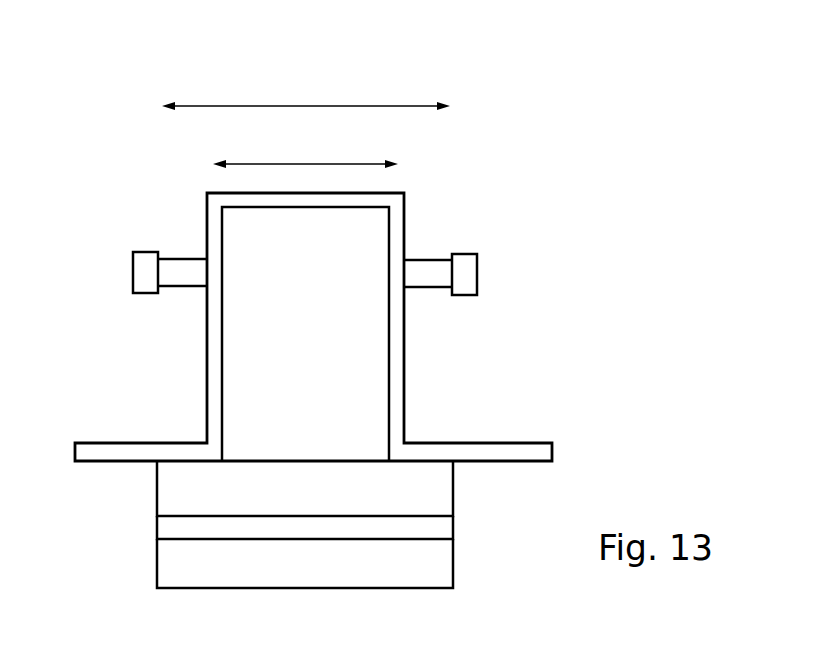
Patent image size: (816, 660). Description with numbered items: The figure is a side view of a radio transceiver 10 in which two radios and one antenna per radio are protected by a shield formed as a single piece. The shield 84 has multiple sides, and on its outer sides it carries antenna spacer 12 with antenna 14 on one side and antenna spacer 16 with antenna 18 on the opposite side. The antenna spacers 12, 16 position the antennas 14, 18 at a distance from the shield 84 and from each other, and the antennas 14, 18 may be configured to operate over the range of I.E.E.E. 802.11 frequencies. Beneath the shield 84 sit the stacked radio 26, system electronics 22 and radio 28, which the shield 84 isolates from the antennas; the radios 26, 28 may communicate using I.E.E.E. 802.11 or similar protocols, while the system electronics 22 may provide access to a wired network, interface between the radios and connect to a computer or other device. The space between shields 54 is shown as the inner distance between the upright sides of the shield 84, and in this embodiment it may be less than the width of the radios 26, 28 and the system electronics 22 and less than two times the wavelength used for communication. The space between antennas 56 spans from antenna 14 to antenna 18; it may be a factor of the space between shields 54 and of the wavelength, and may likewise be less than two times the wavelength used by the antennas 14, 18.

The radio transceiver 10 is at (320, 42).
The antenna spacer 12 is at (190, 287).
The antenna 14 is at (147, 252).
The antenna spacer 16 is at (418, 287).
The antenna 18 is at (465, 253).
The system electronics 22 is at (155, 527).
The radio 26 is at (453, 495).
The radio 28 is at (453, 567).
The space between shields 54 is at (300, 164).
The space between antennas 56 is at (250, 106).
The shield 84 is at (386, 345).